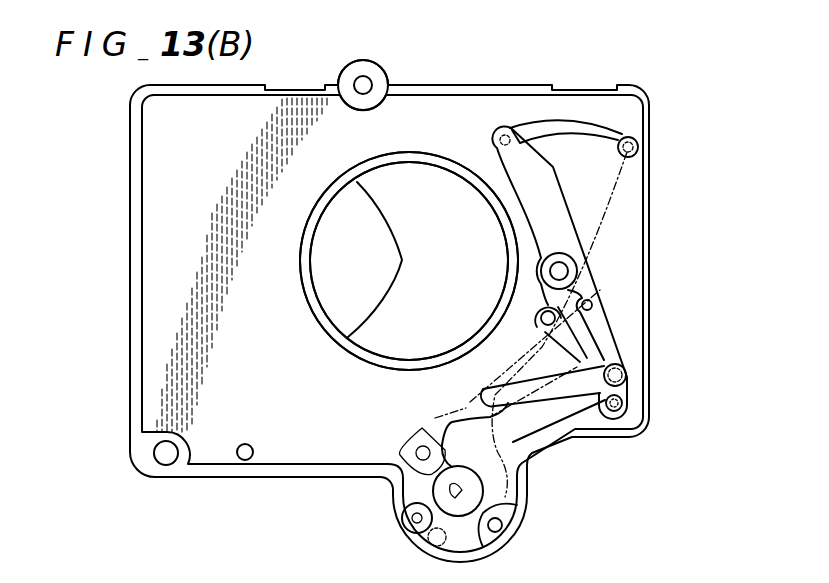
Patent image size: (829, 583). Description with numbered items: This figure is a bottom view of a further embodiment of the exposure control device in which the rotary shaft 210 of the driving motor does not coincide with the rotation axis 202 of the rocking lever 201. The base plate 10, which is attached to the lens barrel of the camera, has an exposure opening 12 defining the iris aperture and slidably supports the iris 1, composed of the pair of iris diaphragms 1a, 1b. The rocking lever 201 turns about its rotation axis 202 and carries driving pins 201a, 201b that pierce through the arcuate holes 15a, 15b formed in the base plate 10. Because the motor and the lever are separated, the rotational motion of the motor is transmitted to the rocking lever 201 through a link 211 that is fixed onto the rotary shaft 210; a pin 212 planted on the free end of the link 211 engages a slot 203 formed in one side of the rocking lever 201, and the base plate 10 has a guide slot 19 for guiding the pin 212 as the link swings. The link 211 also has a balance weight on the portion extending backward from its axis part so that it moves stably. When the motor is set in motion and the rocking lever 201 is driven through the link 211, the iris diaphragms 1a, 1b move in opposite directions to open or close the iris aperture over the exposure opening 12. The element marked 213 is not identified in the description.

The iris 1 is at (489, 52).
The iris diaphragm 1a is at (433, 195).
The iris diaphragm 1b is at (342, 215).
The base plate 10 is at (165, 275).
The exposure opening 12 is at (330, 286).
The arcuate hole 15a is at (580, 143).
The arcuate hole 15b is at (478, 405).
The guide slot 19 is at (583, 335).
The rocking lever 201 is at (547, 240).
The driving pin 201a is at (627, 140).
The driving pin 201b is at (560, 432).
The rotation axis 202 is at (560, 271).
The slot 203 is at (592, 310).
The rotary shaft 210 is at (455, 490).
The link 211 is at (515, 442).
The pin 212 is at (627, 378).
The roller 213 is at (437, 542).